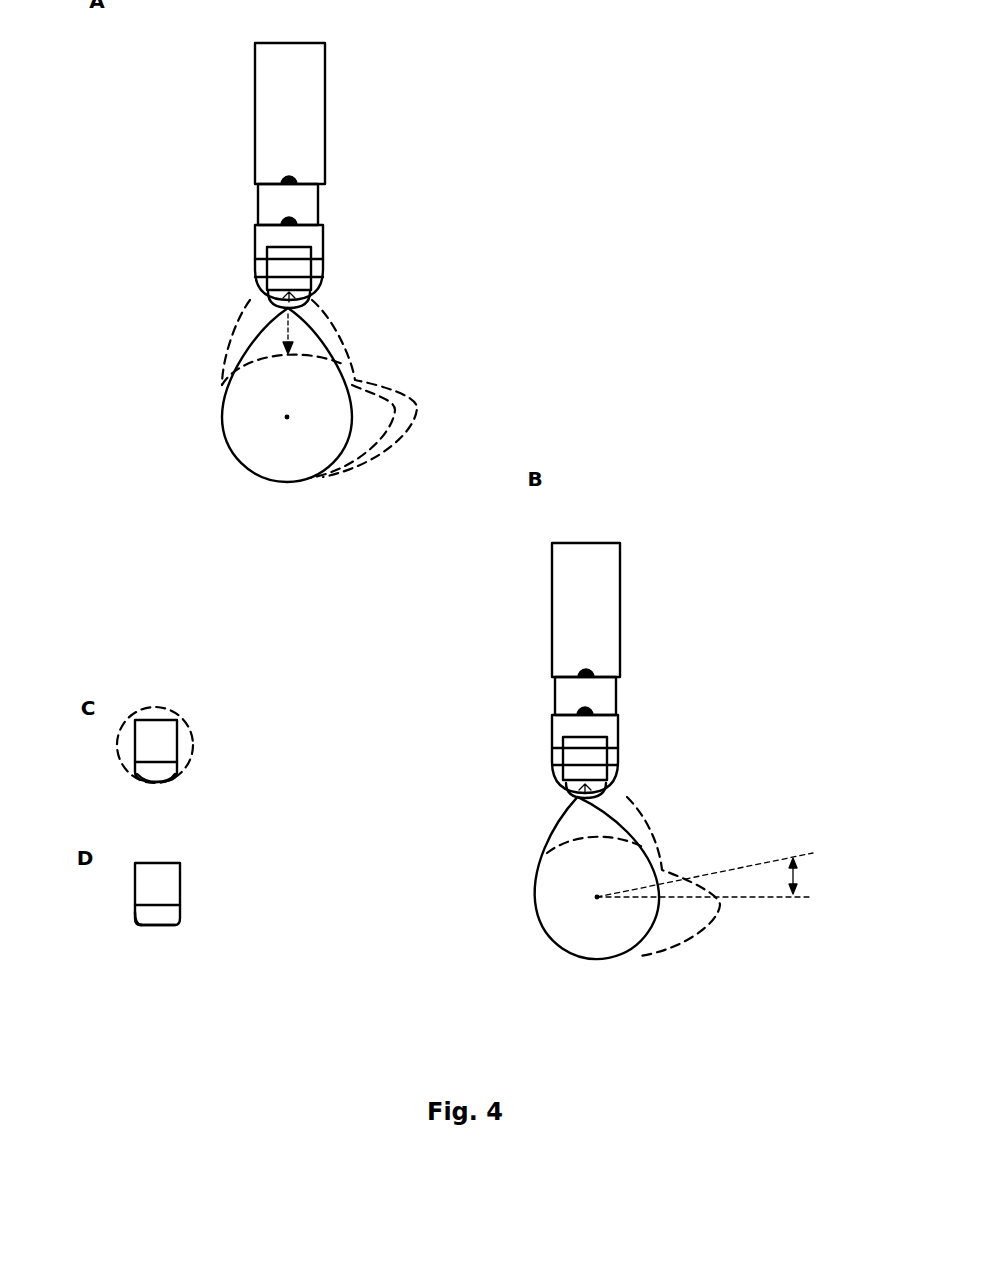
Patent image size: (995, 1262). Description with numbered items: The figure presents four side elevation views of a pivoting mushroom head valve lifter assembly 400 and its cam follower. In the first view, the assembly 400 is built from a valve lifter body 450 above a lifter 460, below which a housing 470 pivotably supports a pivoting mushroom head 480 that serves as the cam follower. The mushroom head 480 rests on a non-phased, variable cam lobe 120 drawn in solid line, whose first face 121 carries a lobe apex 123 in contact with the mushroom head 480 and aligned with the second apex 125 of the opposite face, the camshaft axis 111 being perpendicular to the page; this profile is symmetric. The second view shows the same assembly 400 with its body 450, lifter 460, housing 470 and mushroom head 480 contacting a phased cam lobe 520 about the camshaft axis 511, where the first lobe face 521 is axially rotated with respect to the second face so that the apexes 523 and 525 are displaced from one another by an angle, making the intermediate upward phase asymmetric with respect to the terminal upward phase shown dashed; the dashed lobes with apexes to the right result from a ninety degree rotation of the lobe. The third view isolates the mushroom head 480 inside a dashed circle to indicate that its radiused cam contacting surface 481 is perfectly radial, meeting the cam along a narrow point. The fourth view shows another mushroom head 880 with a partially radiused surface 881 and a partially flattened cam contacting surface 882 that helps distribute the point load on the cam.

The pivoting lifter assembly 400 is at (455, 660).
The valve lifter body 450 is at (602, 636).
The lifter 460 is at (682, 662).
The housing 470 is at (258, 245).
The pivoting mushroom head 480 is at (790, 722).
The radiused cam contacting surface 481 is at (158, 782).
The cam lobe 120 is at (310, 370).
The first face 121 is at (265, 378).
The lobe apex 123 is at (268, 318).
The second apex 125 is at (260, 298).
The camshaft axis 111 is at (283, 420).
The phased cam lobe 520 is at (612, 867).
The first lobe face 521 is at (576, 871).
The apex of first face 523 is at (574, 797).
The apex of second face 525 is at (590, 772).
The camshaft axis 511 is at (595, 898).
The mushroom head 880 is at (162, 887).
The partially radiused surface 881 is at (133, 922).
The partially flattened cam contacting surface 882 is at (155, 928).